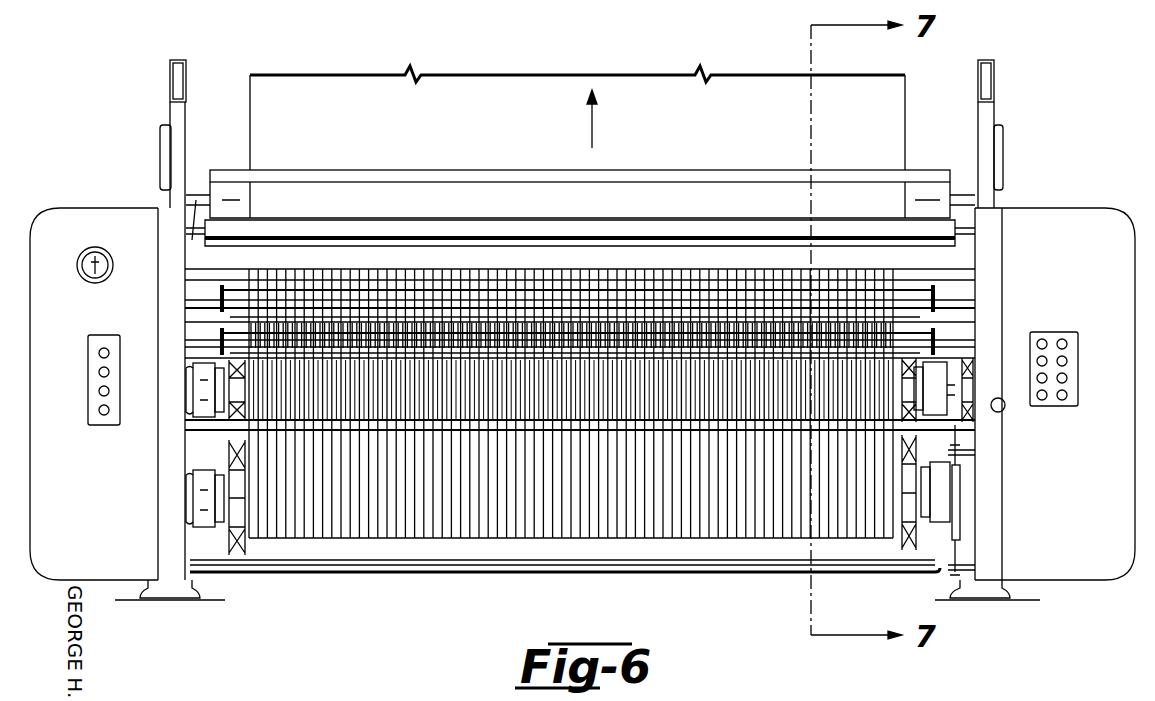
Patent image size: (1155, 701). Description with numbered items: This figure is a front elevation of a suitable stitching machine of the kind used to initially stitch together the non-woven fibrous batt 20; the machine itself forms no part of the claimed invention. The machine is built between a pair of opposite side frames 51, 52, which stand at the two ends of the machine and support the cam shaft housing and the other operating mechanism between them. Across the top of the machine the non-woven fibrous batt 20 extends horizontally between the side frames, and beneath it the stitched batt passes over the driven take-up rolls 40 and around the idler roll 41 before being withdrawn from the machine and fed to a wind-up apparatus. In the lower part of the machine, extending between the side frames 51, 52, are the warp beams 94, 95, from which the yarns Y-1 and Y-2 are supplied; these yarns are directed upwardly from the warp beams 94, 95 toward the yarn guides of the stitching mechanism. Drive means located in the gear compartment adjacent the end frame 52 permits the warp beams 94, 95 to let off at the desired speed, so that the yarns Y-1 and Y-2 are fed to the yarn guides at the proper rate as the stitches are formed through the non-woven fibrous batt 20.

The non-woven fibrous batt 20 is at (546, 70).
The idler roll 41 is at (242, 172).
The driven take-up rolls 40 is at (205, 232).
The side frame 52 is at (172, 302).
The side frame 51 is at (993, 300).
The yarn Y-2 is at (215, 410).
The warp beam 95 is at (243, 440).
The warp beam 94 is at (243, 537).
The yarn Y-1 is at (456, 530).